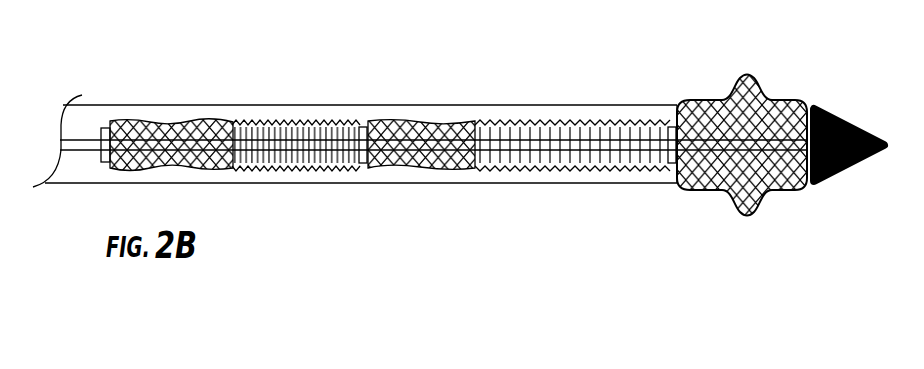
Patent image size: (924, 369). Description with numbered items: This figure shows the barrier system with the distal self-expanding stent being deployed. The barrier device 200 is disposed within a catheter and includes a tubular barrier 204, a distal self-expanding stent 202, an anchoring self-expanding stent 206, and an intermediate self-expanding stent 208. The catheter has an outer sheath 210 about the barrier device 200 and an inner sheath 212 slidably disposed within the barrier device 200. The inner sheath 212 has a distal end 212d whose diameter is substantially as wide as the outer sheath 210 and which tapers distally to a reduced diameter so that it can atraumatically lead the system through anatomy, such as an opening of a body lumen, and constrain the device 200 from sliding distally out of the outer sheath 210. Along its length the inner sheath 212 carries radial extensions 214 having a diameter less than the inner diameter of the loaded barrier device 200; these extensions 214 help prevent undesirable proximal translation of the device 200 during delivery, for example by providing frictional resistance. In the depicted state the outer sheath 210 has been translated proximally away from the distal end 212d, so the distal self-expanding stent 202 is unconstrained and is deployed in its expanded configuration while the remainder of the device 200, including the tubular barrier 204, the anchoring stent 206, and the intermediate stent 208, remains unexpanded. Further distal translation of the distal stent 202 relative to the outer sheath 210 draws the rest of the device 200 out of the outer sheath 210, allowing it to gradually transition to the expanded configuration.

The barrier device 200 is at (553, 120).
The distal self-expanding stent 202 is at (783, 100).
The tubular barrier 204 is at (337, 157).
The anchoring self-expanding stent 206 is at (195, 168).
The intermediate self-expanding stent 208 is at (437, 168).
The outer sheath 210 is at (494, 105).
The inner sheath 212 is at (289, 150).
The distal end 212d is at (830, 105).
The radial extensions 214 is at (105, 128).